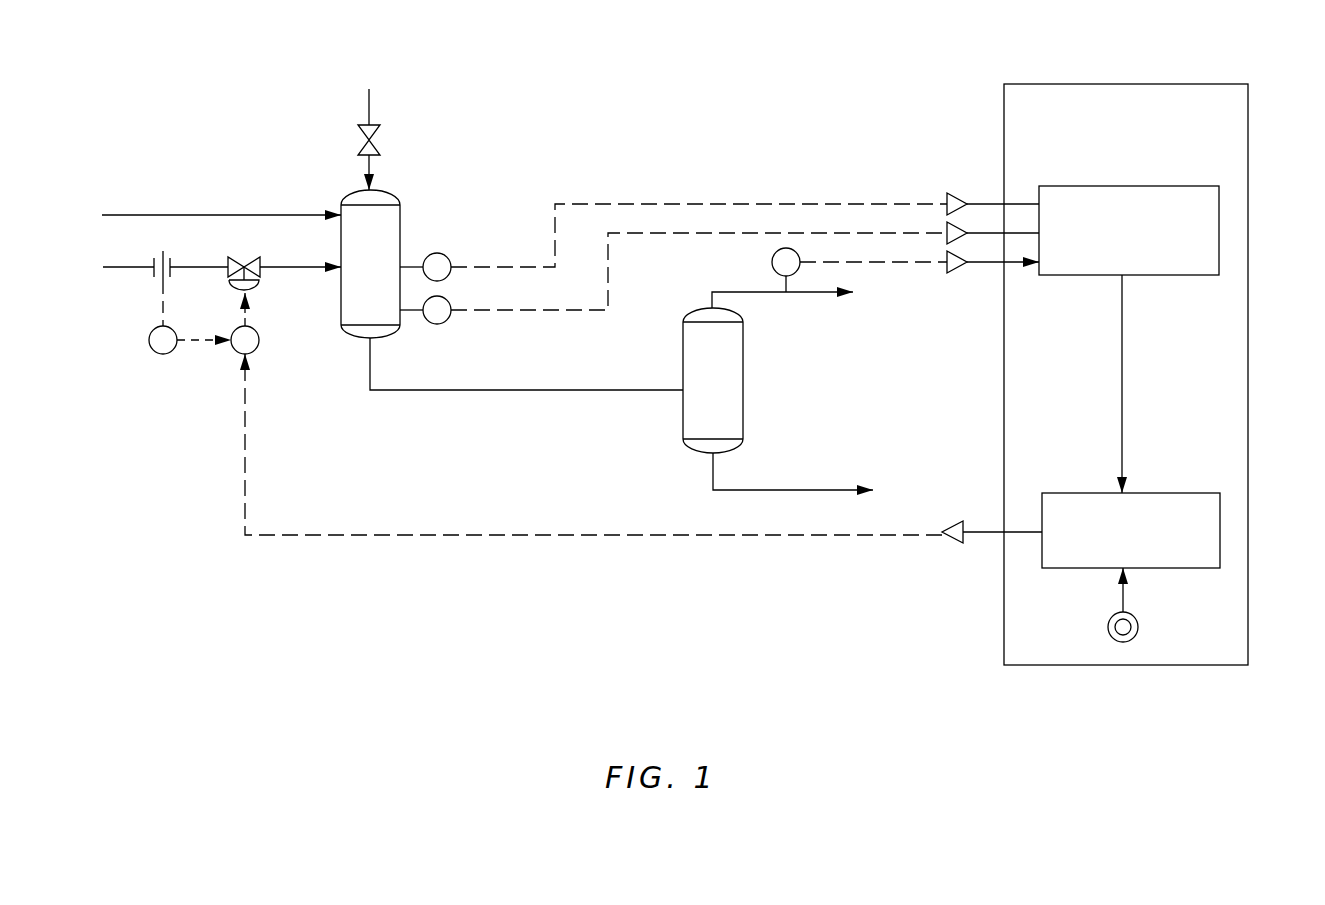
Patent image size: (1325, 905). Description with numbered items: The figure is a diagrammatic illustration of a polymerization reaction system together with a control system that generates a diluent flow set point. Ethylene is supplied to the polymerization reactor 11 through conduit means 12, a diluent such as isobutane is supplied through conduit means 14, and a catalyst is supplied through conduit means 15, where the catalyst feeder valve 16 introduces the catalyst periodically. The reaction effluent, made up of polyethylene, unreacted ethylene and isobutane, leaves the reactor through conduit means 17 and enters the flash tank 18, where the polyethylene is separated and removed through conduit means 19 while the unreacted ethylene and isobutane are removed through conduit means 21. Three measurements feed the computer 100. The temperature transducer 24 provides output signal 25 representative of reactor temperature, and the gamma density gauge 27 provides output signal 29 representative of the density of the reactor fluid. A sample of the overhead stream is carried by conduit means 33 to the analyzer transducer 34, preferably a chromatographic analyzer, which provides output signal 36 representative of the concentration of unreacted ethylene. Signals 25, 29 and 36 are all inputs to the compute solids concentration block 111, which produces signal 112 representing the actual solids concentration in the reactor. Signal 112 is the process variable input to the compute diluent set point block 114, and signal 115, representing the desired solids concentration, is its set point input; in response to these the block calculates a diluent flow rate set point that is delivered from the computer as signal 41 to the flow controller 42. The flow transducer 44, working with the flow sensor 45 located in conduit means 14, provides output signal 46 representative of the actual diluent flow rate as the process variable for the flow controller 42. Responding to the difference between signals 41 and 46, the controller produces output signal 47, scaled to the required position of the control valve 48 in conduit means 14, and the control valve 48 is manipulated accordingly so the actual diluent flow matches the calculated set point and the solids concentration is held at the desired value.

The polymerization reactor 11 is at (400, 218).
The conduit means 12 is at (235, 214).
The conduit means 14 is at (127, 267).
The conduit means 15 is at (369, 100).
The catalyst feeder valve 16 is at (380, 140).
The conduit means 17 is at (425, 390).
The flash tank 18 is at (683, 420).
The conduit means 19 is at (713, 466).
The conduit means 21 is at (773, 292).
The temperature transducer 24 is at (450, 258).
The output signal 25 is at (532, 266).
The gamma density gauge 27 is at (437, 324).
The output signal 29 is at (543, 311).
The conduit means 33 is at (786, 283).
The analyzer transducer 34 is at (772, 262).
The output signal 36 is at (923, 262).
The signal 41 is at (663, 537).
The flow controller 42 is at (259, 340).
The flow transducer 44 is at (172, 328).
The flow sensor 45 is at (170, 267).
The output signal 46 is at (195, 345).
The output signal 47 is at (249, 310).
The control valve 48 is at (260, 276).
The computer 100 is at (1248, 150).
The compute solids concentration block 111 is at (1130, 186).
The signal 112 is at (1122, 397).
The compute diluent set point block 114 is at (1178, 493).
The signal 115 is at (1123, 594).